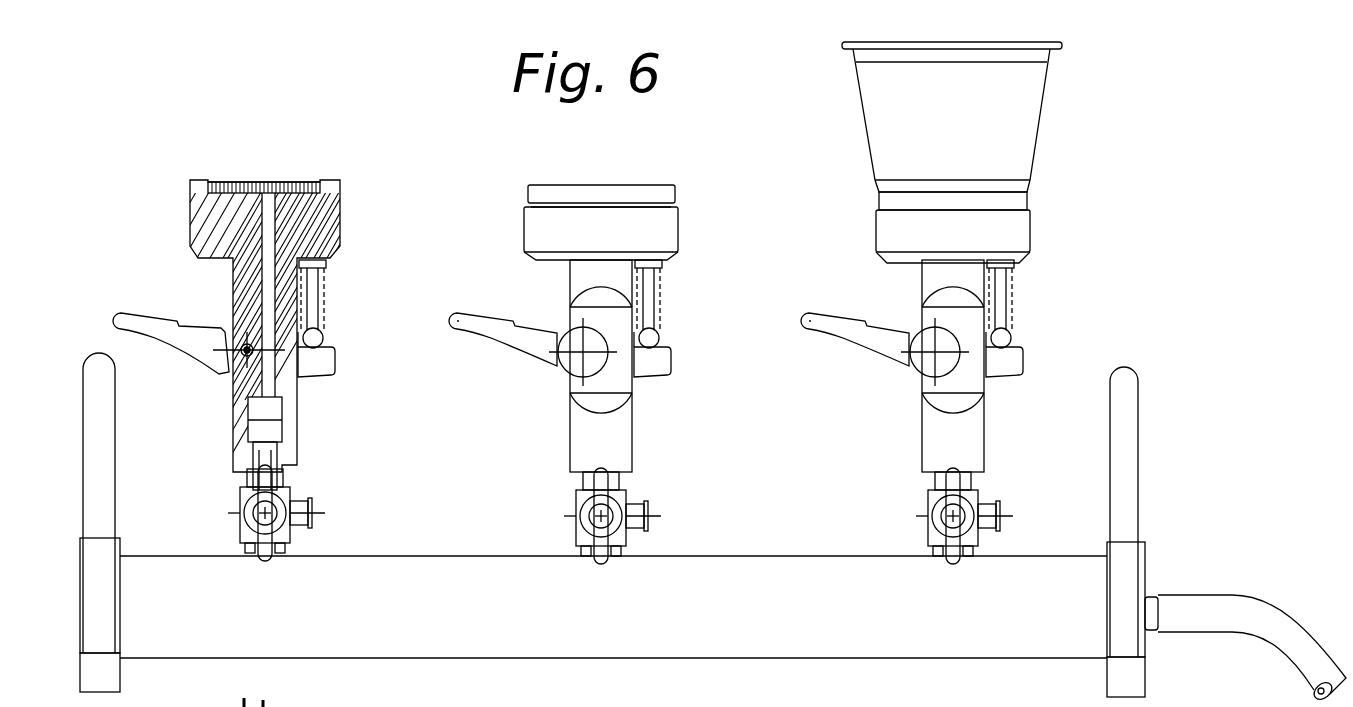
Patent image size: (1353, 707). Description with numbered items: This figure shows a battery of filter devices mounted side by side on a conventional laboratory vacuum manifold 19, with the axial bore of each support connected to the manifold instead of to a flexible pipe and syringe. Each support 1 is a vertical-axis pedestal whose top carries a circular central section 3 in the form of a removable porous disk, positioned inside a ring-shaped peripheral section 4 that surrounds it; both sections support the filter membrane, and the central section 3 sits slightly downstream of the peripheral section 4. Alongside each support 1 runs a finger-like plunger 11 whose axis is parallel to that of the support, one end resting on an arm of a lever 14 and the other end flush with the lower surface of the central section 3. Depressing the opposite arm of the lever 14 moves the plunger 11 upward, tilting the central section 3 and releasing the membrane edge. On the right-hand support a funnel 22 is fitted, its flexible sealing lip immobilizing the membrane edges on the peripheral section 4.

The support 1 is at (480, 258).
The central section 3 is at (264, 181).
The peripheral section 4 is at (343, 196).
The plunger 11 is at (648, 296).
The lever 14 is at (468, 330).
The vacuum manifold 19 is at (890, 648).
The funnel 22 is at (1068, 103).